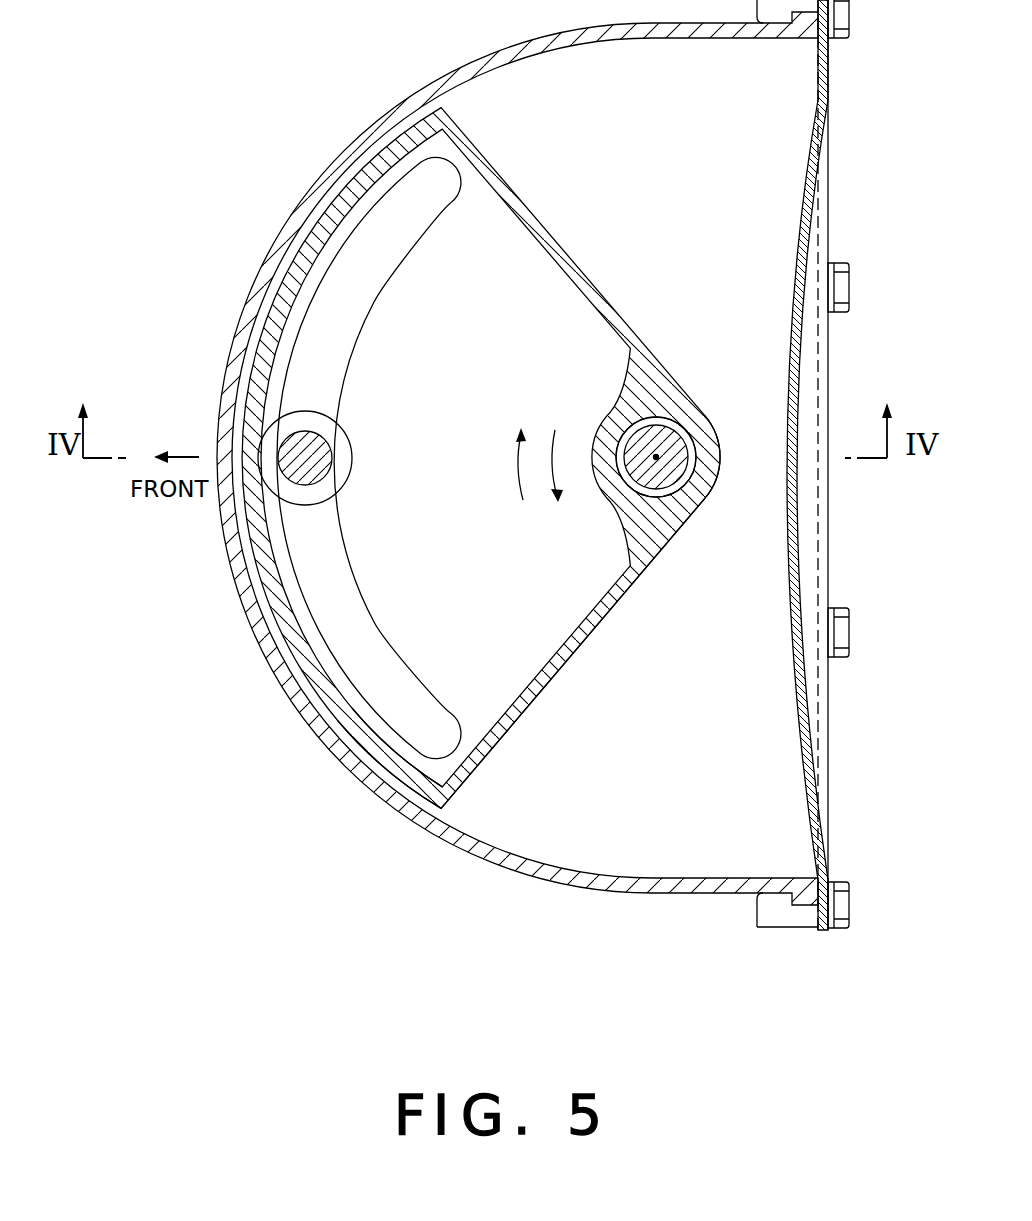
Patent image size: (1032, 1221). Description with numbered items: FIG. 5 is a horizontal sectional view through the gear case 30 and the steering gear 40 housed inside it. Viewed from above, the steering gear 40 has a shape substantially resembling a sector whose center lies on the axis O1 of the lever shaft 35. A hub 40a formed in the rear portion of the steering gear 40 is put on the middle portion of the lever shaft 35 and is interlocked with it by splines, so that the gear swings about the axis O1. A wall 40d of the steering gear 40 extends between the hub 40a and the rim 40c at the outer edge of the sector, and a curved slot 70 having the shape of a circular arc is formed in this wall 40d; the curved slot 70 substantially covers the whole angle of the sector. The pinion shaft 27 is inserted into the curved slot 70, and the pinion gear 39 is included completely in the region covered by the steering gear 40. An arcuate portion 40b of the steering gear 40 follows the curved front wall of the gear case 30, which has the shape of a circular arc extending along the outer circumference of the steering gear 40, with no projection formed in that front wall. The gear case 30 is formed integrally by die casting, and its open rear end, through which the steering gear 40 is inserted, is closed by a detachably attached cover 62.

The gear case 30 is at (617, 892).
The cover 62 is at (808, 702).
The steering gear 40 is at (558, 232).
The hub 40a is at (689, 505).
The arcuate wall portion of swing arm 40b is at (427, 767).
The rim 40c is at (350, 727).
The wall 40d is at (540, 630).
The curved slot 70 is at (352, 318).
The pinion gear 39 is at (305, 487).
The pinion shaft 27 is at (325, 455).
The lever shaft 35 is at (662, 440).
The axis O1 is at (657, 454).